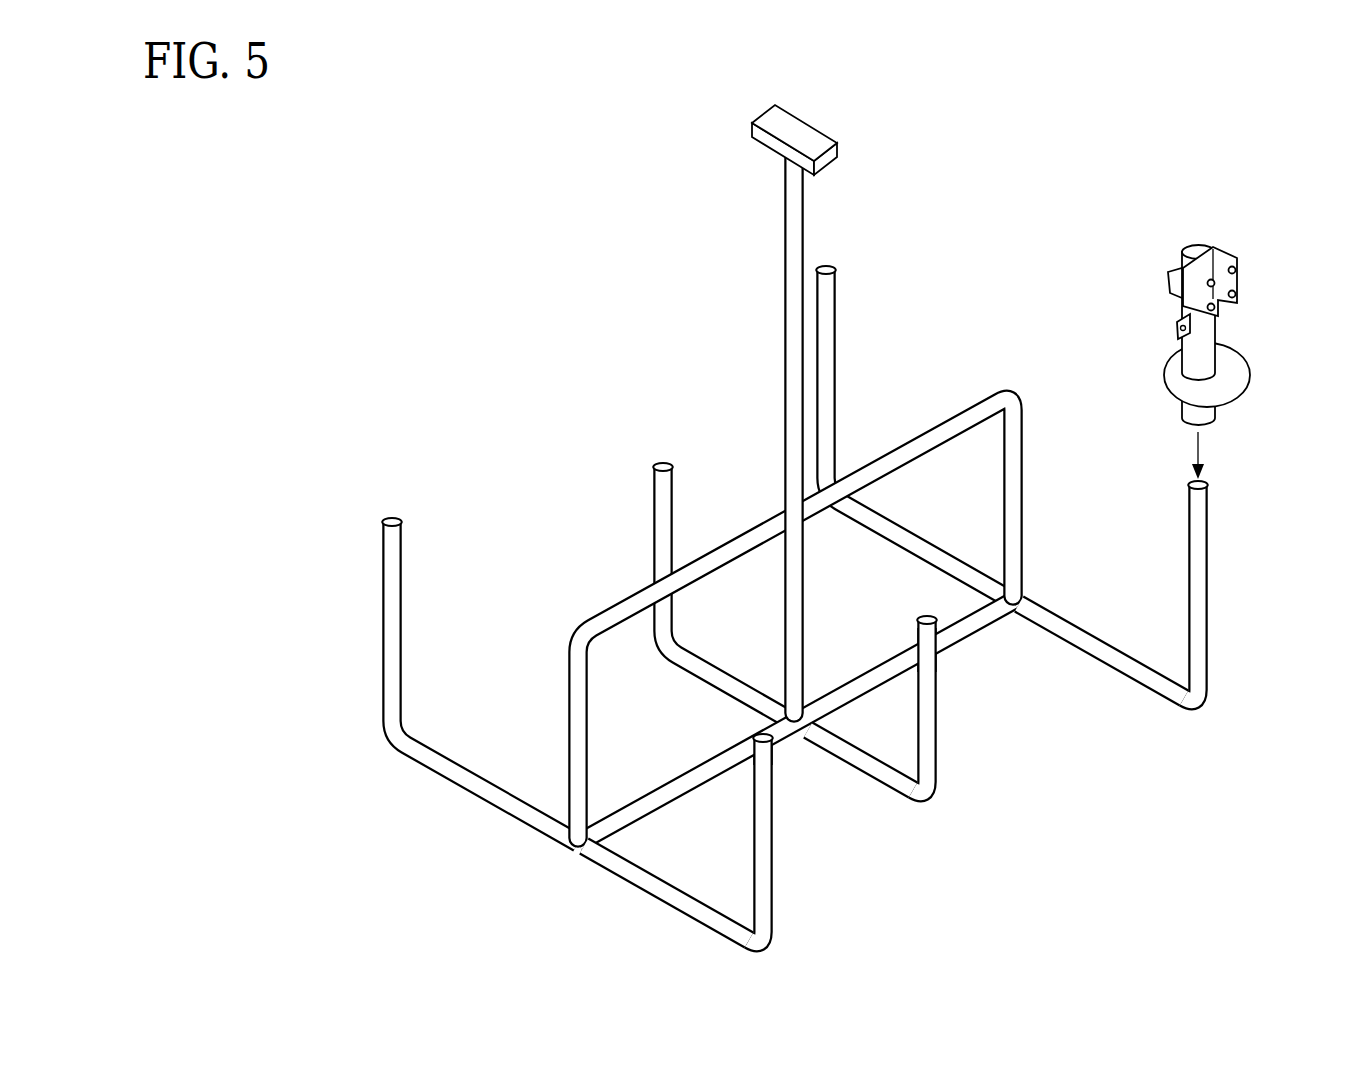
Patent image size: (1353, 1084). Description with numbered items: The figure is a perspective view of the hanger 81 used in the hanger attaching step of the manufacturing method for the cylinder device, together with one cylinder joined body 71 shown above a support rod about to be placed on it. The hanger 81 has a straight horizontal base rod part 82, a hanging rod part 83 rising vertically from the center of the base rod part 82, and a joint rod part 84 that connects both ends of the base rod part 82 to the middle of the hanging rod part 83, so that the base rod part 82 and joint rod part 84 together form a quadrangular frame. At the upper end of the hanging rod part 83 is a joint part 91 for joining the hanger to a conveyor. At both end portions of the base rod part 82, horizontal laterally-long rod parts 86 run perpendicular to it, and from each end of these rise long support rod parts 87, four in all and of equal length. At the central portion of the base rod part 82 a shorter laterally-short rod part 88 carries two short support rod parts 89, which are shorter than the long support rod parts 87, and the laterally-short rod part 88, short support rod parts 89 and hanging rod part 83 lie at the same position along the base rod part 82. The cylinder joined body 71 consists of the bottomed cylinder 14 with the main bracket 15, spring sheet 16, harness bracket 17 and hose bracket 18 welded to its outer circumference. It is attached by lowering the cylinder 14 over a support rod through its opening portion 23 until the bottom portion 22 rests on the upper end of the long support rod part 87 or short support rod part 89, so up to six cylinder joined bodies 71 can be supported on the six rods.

The hanger 81 is at (582, 214).
The base rod part 82 is at (960, 645).
The hanging rod part 83 is at (784, 228).
The joint rod part 84 is at (948, 422).
The laterally-long rod part 86 is at (1116, 673).
The long support rod part 87 is at (400, 578).
The laterally-short rod part 88 is at (866, 770).
The short support rod part 89 is at (672, 507).
The joint part 91 is at (800, 128).
The cylinder joined body 71 is at (1206, 319).
The cylinder 14 is at (1217, 328).
The main bracket 15 is at (1237, 292).
The spring sheet 16 is at (1250, 388).
The harness bracket 17 is at (1177, 335).
The hose bracket 18 is at (1170, 288).
The bottom portion 22 is at (1197, 250).
The opening portion 23 is at (1187, 422).